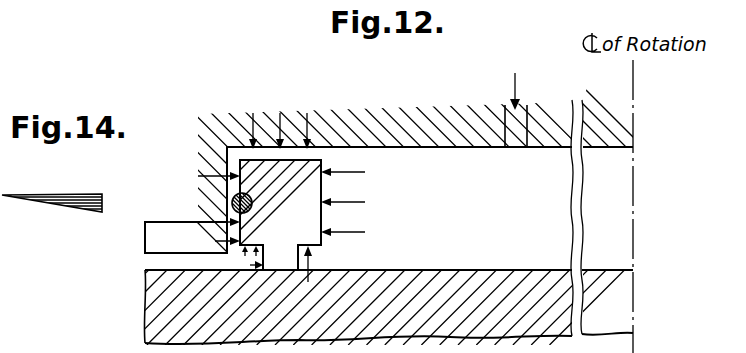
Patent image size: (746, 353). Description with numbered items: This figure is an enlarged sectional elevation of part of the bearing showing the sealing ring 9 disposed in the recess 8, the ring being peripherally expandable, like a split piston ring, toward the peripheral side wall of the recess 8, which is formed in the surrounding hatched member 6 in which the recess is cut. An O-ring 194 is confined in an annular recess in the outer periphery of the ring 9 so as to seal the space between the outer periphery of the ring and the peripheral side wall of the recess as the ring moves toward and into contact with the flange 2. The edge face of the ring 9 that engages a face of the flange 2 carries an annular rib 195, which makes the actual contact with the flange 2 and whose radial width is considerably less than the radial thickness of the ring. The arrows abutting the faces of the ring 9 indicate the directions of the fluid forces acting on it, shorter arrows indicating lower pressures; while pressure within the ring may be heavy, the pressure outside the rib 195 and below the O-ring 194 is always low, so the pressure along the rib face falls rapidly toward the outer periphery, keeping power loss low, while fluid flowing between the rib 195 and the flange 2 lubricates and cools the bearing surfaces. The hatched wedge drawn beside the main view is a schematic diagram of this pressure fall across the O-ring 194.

The housing 6 is at (432, 130).
The flange 2 is at (478, 268).
The recess 8 is at (456, 199).
The sealing ring 9 is at (289, 206).
The O-ring 194 is at (233, 204).
The annular rib 195 is at (285, 265).